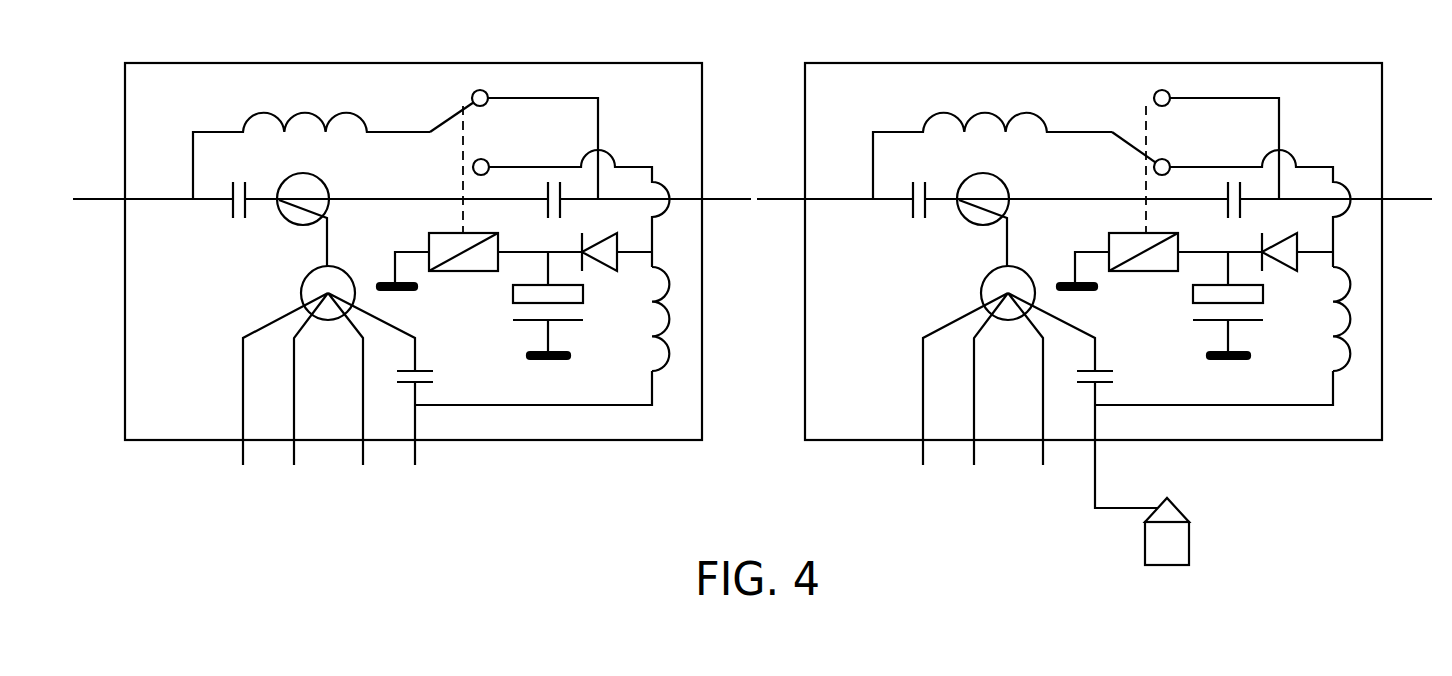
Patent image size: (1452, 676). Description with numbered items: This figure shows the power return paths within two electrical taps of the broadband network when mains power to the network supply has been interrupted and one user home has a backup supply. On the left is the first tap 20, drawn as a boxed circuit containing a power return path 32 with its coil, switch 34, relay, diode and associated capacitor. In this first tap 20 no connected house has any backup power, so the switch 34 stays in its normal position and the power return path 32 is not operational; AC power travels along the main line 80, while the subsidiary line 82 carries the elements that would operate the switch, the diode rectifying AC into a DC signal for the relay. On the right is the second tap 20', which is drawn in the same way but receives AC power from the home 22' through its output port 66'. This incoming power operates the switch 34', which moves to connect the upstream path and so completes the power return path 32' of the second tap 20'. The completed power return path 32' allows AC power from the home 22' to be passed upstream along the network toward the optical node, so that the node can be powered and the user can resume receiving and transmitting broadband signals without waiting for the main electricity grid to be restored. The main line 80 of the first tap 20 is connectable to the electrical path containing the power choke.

The outdoor tap 20 is at (443, 251).
The switch 34 is at (449, 153).
The main line 80 is at (477, 87).
The power return path 32 is at (703, 333).
The second tap 20' is at (1125, 251).
The switch 34' is at (1128, 161).
The subsidiary line 82 is at (1167, 160).
The power return path 32' is at (1385, 333).
The port 66' is at (1126, 445).
The home 22' is at (1197, 531).